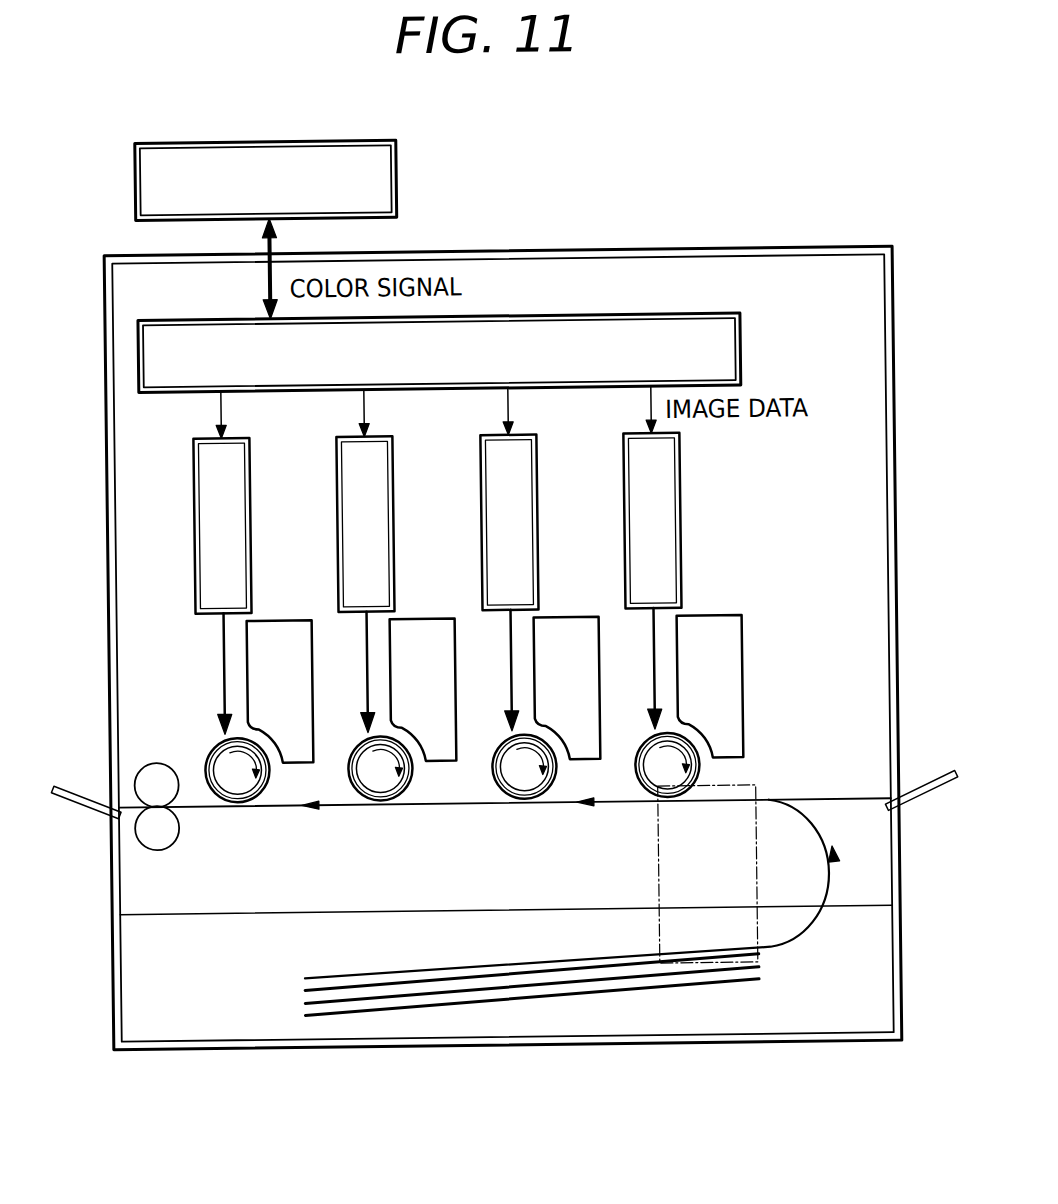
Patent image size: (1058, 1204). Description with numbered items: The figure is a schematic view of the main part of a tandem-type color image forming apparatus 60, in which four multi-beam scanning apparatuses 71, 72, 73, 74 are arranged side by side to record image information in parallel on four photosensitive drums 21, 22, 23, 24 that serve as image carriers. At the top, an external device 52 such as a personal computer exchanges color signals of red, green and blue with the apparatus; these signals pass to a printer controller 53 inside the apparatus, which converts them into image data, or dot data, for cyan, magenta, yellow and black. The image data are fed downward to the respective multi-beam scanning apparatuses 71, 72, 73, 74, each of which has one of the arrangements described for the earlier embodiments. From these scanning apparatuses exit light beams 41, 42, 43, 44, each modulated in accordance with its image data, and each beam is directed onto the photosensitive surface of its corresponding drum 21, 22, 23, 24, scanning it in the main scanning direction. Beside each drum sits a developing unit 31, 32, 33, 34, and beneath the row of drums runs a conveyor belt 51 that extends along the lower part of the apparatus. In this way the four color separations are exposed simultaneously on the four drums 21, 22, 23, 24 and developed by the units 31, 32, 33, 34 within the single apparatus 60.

The photosensitive drum 21 is at (236, 785).
The photosensitive drum 22 is at (379, 785).
The photosensitive drum 23 is at (523, 785).
The photosensitive drum 24 is at (666, 785).
The developing unit 31 is at (290, 625).
The developing unit 32 is at (433, 625).
The developing unit 33 is at (577, 625).
The developing unit 34 is at (720, 625).
The light beam 41 is at (224, 679).
The light beam 42 is at (367, 679).
The light beam 43 is at (511, 679).
The light beam 44 is at (654, 679).
The conveyor belt 51 is at (826, 815).
The external device 52 is at (403, 158).
The printer controller 53 is at (744, 341).
The color image forming apparatus 60 is at (757, 232).
The multi-beam scanning apparatus 71 is at (219, 494).
The multi-beam scanning apparatus 72 is at (362, 494).
The multi-beam scanning apparatus 73 is at (506, 494).
The multi-beam scanning apparatus 74 is at (649, 494).